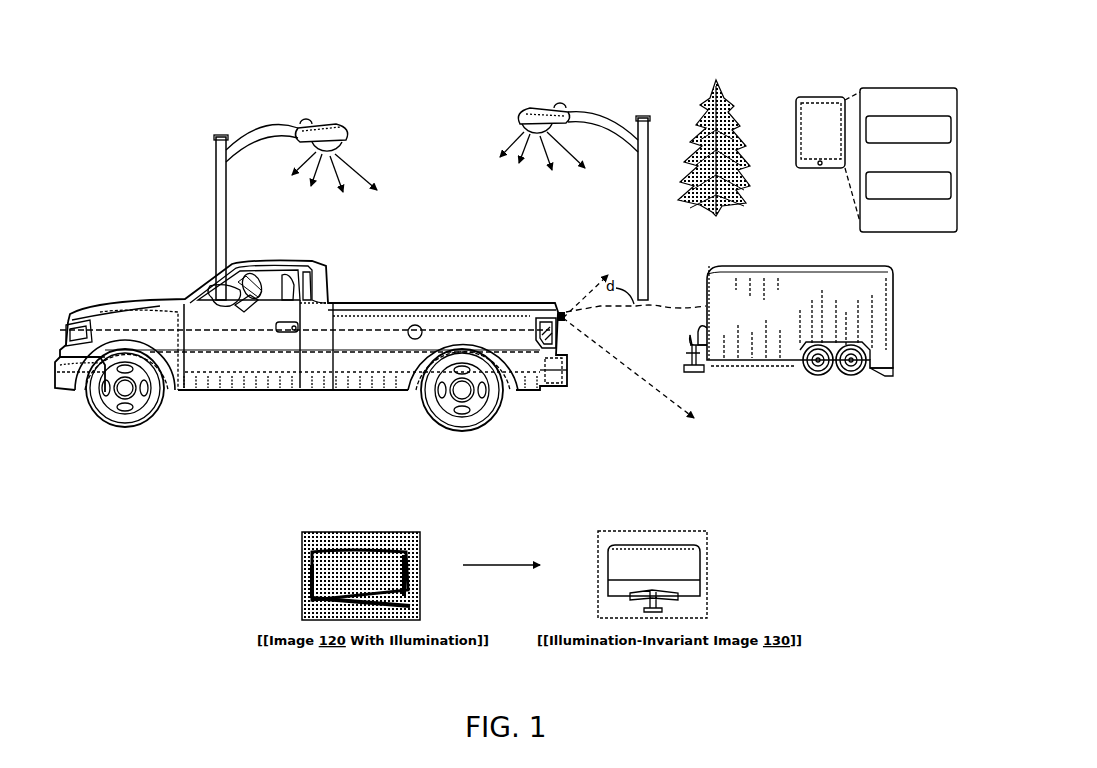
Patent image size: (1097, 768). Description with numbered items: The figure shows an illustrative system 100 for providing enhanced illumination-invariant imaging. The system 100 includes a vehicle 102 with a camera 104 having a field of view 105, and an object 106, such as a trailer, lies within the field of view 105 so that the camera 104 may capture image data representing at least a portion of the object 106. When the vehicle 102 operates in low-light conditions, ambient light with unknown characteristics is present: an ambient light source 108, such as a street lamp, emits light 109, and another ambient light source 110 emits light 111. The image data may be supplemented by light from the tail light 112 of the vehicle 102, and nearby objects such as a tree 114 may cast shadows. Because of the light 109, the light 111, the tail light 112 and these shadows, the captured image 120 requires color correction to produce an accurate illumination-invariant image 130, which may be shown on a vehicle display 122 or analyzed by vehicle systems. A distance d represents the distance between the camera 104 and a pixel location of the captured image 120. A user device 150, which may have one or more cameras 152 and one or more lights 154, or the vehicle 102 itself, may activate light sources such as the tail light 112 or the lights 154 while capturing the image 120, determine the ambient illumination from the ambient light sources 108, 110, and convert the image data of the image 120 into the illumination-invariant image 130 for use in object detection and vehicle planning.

The system 100 is at (925, 34).
The vehicle 102 is at (280, 262).
The camera 104 is at (571, 318).
The field of view 105 is at (628, 376).
The object 106 is at (899, 270).
The ambient light source 108 is at (326, 127).
The light 109 is at (364, 211).
The ambient light source 110 is at (565, 106).
The light 111 is at (513, 189).
The tail light 112 is at (532, 328).
The tree 114 is at (716, 84).
The captured image 120 is at (380, 532).
The vehicle display 122 is at (232, 312).
The illumination-invariant image 130 is at (666, 532).
The user device 150 is at (822, 98).
The cameras 152 is at (909, 116).
The lights 154 is at (907, 172).